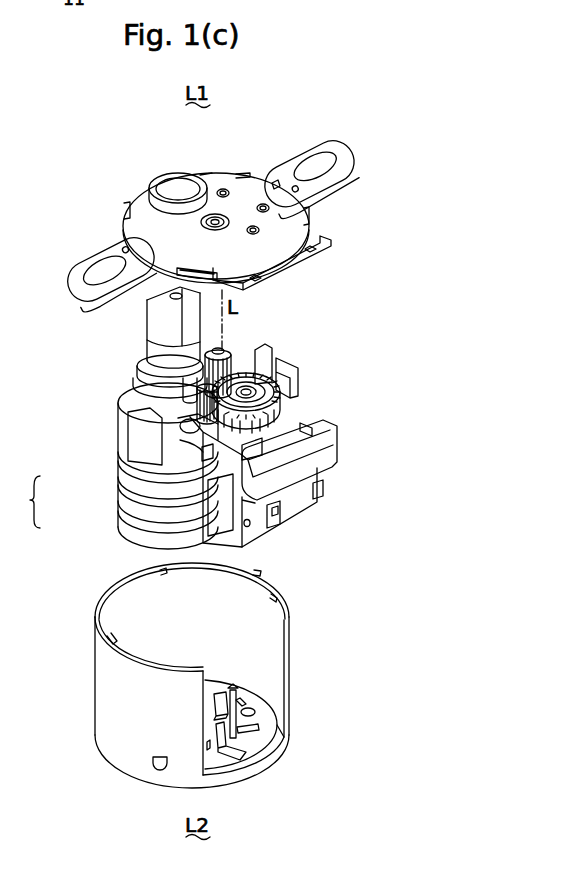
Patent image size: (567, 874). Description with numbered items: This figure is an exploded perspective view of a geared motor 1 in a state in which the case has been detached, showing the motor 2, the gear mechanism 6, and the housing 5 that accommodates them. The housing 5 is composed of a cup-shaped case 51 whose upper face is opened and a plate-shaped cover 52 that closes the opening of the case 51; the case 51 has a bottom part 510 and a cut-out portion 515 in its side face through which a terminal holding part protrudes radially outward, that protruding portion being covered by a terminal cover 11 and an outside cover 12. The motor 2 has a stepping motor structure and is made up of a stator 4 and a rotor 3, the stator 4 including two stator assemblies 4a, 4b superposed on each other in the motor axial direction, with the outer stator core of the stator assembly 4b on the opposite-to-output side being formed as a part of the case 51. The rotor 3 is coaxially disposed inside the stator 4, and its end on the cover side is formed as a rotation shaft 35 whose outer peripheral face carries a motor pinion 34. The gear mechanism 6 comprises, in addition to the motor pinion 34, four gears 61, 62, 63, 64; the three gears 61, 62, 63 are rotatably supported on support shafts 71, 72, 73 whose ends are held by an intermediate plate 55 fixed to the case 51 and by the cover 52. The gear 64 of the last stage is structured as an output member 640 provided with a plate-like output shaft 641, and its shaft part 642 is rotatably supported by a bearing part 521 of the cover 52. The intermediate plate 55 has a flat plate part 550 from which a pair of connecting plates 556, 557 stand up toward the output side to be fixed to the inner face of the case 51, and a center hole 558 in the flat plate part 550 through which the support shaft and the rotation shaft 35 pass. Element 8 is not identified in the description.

The geared motor 1 is at (276, 136).
The motor 2 is at (181, 528).
The rotor 3 is at (202, 427).
The stator 4 is at (116, 492).
The stator assembly 4a is at (116, 471).
The stator assembly 4b is at (117, 501).
The housing 5 is at (283, 258).
The gear mechanism 6 is at (279, 432).
The stator core 8 is at (230, 404).
The terminal cover 11 is at (310, 500).
The outside cover 12 is at (315, 443).
The motor pinion 34 is at (134, 392).
The rotation shaft 35 is at (200, 405).
The case 51 is at (290, 641).
The cover 52 is at (217, 242).
The intermediate plate 55 is at (113, 422).
The gear 61 is at (250, 394).
The gear 62 is at (274, 393).
The gear 63 is at (228, 341).
The gear of a last stage 64 is at (116, 342).
The support shaft 71 is at (280, 416).
The support shaft 72 is at (288, 376).
The support shaft 73 is at (240, 370).
The bottom part 510 is at (229, 765).
The cut-out portion 515 is at (287, 672).
The bearing part 521 is at (185, 176).
The flat plate part 550 is at (120, 413).
The connecting plate 556 is at (143, 435).
The connecting plate 557 is at (266, 358).
The center hole 558 is at (190, 423).
The output member 640 is at (138, 356).
The output shaft 641 is at (147, 318).
The shaft part 642 is at (177, 357).